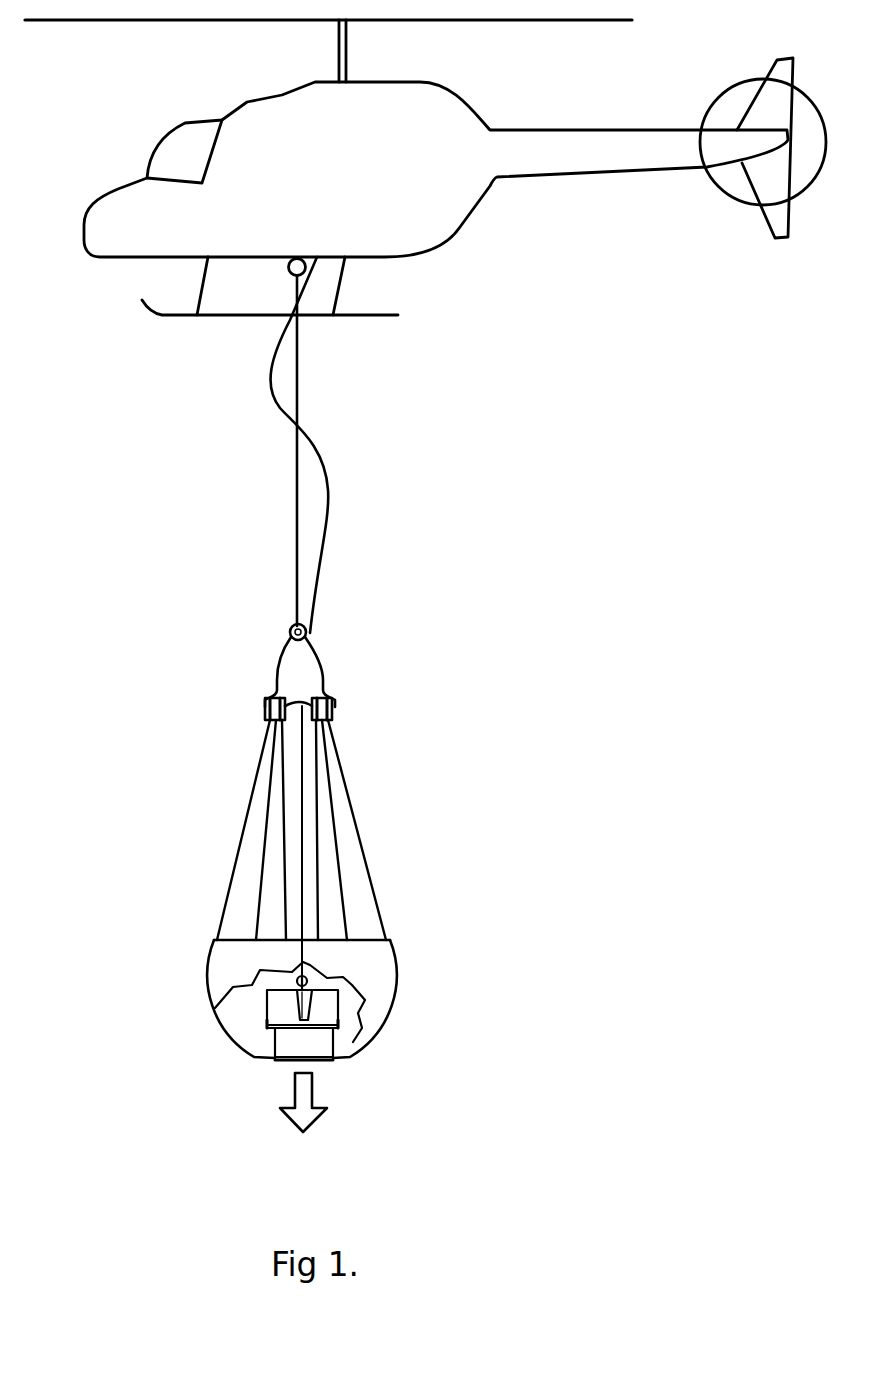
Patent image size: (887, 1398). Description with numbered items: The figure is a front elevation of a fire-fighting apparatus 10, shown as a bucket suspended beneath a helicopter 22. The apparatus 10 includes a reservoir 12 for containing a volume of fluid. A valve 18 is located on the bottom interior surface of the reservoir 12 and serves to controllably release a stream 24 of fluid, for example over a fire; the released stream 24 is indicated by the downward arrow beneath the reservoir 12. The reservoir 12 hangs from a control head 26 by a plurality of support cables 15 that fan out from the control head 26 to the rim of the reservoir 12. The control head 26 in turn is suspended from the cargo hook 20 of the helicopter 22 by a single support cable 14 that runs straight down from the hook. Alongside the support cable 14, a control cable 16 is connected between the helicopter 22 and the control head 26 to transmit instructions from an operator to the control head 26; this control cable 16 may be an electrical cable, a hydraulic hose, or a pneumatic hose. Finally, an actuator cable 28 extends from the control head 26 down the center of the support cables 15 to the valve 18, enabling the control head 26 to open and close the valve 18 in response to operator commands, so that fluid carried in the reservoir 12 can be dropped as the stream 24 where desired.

The fire-fighting apparatus 10 is at (331, 991).
The reservoir 12 is at (401, 979).
The support cable 14 is at (284, 489).
The support cables 15 is at (249, 782).
The control cable 16 is at (335, 467).
The valve 18 is at (257, 1016).
The cargo hook 20 is at (283, 282).
The helicopter 22 is at (452, 255).
The stream of fluid 24 is at (303, 1120).
The control head 26 is at (326, 671).
The actuator cable 28 is at (308, 774).